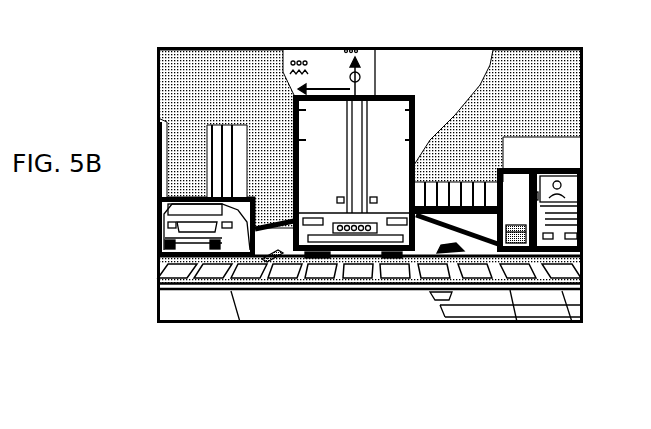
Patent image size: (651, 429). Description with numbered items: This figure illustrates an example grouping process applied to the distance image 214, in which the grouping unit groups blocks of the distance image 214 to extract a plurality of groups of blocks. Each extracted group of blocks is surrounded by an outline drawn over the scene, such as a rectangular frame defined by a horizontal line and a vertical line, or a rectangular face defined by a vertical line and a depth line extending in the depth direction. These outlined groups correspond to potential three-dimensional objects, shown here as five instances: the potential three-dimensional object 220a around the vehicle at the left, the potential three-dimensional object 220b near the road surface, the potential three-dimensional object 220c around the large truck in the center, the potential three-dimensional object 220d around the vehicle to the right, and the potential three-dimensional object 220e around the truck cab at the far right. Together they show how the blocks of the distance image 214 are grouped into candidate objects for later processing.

The distance image 214 is at (497, 30).
The potential three-dimensional object 220a is at (170, 291).
The potential three-dimensional object 220b is at (240, 258).
The potential three-dimensional object 220c is at (350, 253).
The potential three-dimensional object 220d is at (496, 240).
The potential three-dimensional object 220e is at (565, 256).